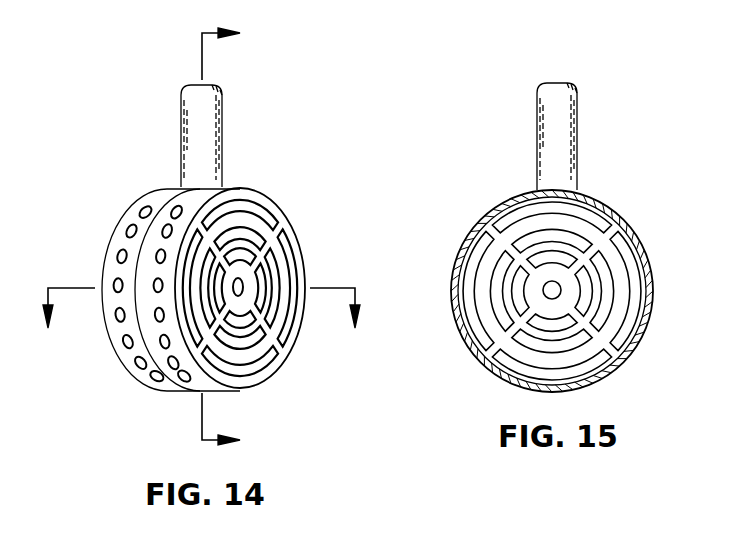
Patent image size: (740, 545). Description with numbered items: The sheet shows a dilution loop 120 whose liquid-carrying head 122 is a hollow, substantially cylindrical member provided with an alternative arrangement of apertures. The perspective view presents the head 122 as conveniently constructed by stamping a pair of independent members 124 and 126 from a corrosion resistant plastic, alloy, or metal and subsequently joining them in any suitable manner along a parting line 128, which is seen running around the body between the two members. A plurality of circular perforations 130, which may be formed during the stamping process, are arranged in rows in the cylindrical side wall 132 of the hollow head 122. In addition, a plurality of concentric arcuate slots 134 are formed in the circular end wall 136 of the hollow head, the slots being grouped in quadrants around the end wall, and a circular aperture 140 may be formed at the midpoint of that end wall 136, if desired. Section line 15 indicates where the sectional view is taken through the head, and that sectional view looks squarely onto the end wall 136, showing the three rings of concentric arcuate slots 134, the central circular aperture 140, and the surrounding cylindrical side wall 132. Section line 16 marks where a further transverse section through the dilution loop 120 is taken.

In FIG. 14, the dilution loop 120 is at (150, 172).
In FIG. 14, the liquid-carrying head 122 is at (122, 208).
In FIG. 14, the independent member 124 is at (118, 243).
In FIG. 14, the independent member 126 is at (270, 370).
In FIG. 14, the parting line 128 is at (137, 272).
In FIG. 14, the circular perforations 130 is at (186, 384).
In FIG. 14, the cylindrical side wall 132 is at (140, 377).
In FIG. 15, the cylindrical side wall 132 is at (484, 216).
In FIG. 14, the concentric arcuate slots 134 is at (248, 210).
In FIG. 15, the concentric arcuate slots 134 is at (632, 314).
In FIG. 14, the circular end wall 136 is at (283, 222).
In FIG. 14, the circular aperture 140 is at (243, 285).
In FIG. 15, the circular aperture 140 is at (559, 287).
In FIG. 14, the section line 15— 15 is at (236, 239).
In FIG. 14, the section line 16— 16 is at (203, 322).